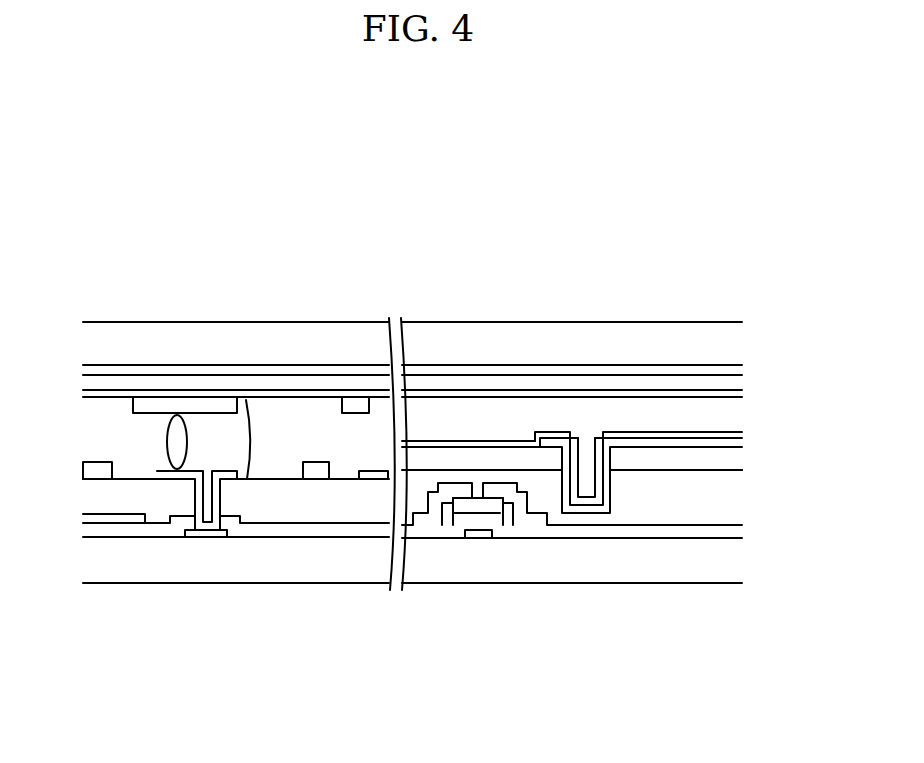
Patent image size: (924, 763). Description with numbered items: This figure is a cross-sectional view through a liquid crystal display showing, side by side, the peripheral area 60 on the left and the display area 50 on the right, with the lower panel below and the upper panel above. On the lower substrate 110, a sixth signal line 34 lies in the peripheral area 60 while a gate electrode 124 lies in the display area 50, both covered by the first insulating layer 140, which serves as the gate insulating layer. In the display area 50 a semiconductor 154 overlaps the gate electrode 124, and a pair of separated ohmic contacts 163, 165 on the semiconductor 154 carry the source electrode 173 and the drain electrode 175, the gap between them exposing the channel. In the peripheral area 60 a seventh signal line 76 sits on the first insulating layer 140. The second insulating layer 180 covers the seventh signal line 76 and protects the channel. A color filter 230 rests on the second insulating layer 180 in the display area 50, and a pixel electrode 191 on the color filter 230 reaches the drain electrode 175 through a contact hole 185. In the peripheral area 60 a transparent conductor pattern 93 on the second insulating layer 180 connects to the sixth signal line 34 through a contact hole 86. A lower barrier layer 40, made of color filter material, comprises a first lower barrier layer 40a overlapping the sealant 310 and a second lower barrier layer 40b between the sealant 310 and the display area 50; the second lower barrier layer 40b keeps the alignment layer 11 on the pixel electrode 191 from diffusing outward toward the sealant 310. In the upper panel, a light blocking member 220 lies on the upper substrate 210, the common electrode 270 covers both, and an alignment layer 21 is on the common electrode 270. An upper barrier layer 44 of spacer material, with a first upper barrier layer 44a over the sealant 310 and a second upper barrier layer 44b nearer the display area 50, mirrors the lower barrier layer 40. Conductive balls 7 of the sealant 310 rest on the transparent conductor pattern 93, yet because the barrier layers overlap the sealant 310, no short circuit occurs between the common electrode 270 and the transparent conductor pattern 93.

The peripheral area 60 is at (397, 206).
The display area 50 is at (742, 206).
The upper substrate 210 is at (733, 343).
The light blocking member 220 is at (745, 372).
The common electrode 270 is at (745, 395).
The alignment layer 21 is at (497, 398).
The upper barrier layer 44 is at (251, 327).
The first upper barrier layer 44a is at (148, 403).
The second upper barrier layer 44b is at (357, 397).
The conductive balls 7 is at (167, 441).
The sealant 310 is at (96, 431).
The second insulating layer 180 is at (357, 507).
The lower barrier layer 40 is at (206, 608).
The first lower barrier layer 40a is at (98, 470).
The second lower barrier layer 40b is at (318, 470).
The alignment layer 11 is at (372, 477).
The transparent conductor pattern 93 is at (165, 475).
The contact hole 86 is at (200, 488).
The seventh signal line 76 is at (100, 518).
The sixth signal line 34 is at (207, 533).
The first insulating layer 140 is at (745, 533).
The lower substrate 110 is at (733, 563).
The pixel electrode 191 is at (745, 443).
The contact hole 185 is at (565, 469).
The source electrode 173 is at (422, 519).
The drain electrode 175 is at (592, 520).
The semiconductor 154 is at (467, 501).
The ohmic contact 163 is at (447, 505).
The ohmic contact 165 is at (512, 503).
The gate electrode 124 is at (482, 533).
The color filter 230 is at (673, 502).